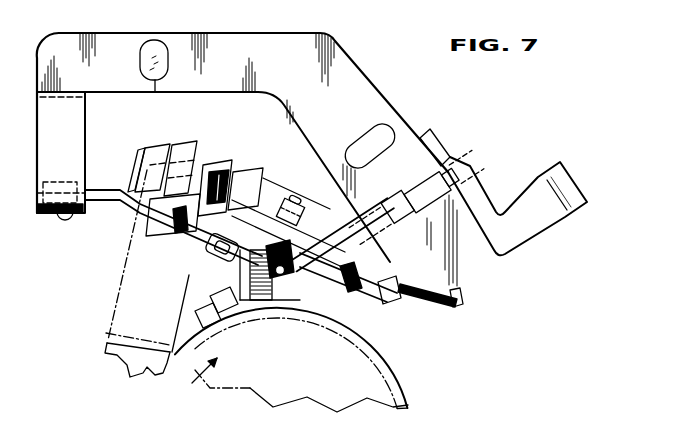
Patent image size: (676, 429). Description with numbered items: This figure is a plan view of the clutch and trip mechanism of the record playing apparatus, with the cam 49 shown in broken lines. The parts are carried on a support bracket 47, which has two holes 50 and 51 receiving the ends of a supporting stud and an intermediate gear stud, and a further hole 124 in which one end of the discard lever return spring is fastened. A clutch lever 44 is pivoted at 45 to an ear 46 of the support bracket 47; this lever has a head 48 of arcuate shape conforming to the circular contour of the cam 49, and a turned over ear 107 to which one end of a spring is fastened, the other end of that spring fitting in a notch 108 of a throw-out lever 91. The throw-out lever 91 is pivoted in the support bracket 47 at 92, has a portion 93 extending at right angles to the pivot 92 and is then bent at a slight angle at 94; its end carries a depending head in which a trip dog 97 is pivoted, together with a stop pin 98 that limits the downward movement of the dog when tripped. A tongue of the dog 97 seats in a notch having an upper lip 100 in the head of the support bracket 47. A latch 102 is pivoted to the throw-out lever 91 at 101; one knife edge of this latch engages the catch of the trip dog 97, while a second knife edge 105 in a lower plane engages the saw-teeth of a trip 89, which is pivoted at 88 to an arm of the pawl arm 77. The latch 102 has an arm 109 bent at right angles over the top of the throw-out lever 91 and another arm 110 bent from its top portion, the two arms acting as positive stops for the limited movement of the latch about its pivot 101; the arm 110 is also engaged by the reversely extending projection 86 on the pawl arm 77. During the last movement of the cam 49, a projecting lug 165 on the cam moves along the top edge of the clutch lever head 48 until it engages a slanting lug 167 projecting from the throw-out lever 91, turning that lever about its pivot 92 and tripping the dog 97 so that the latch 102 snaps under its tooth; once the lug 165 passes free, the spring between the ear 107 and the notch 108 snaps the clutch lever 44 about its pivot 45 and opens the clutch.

The clutch lever 44 is at (498, 210).
The pivot 45 is at (405, 187).
The ear 46 is at (387, 198).
The support bracket 47 is at (337, 48).
The head 48 is at (191, 323).
The cam 49 is at (403, 380).
The hole 50 is at (157, 52).
The hole 51 is at (390, 127).
The pawl arm 77 is at (107, 343).
The projection 86 is at (153, 176).
The pivot 88 is at (298, 197).
The saw-toothed trip 89 is at (146, 156).
The throw-out lever 91 is at (378, 300).
The pivot 92 is at (58, 220).
The portion 93 is at (112, 201).
The bent portion 94 is at (135, 208).
The trip dog 97 is at (258, 228).
The stop pin 98 is at (377, 233).
The upper lip 100 is at (418, 300).
The pivot 101 is at (192, 262).
The latch 102 is at (187, 246).
The knife edge 105 is at (216, 183).
The turned over ear 107 is at (348, 282).
The notch 108 is at (300, 242).
The arm 109 is at (190, 167).
The arm 110 is at (241, 192).
The hole 124 is at (445, 306).
The projecting lug 165 is at (240, 318).
The slanting lug 167 is at (243, 273).